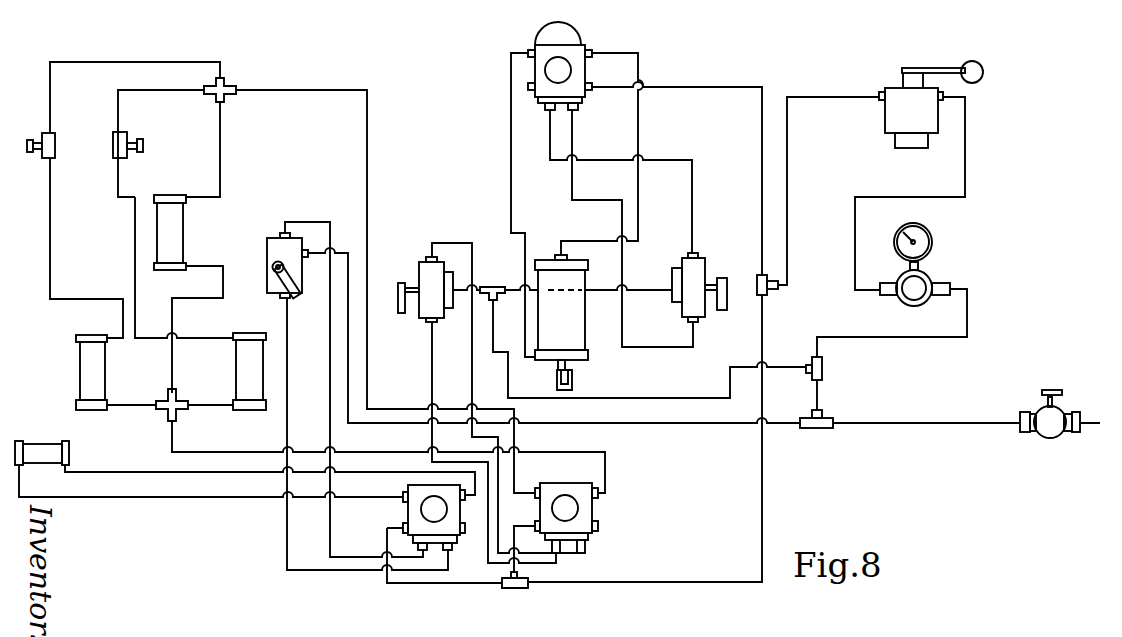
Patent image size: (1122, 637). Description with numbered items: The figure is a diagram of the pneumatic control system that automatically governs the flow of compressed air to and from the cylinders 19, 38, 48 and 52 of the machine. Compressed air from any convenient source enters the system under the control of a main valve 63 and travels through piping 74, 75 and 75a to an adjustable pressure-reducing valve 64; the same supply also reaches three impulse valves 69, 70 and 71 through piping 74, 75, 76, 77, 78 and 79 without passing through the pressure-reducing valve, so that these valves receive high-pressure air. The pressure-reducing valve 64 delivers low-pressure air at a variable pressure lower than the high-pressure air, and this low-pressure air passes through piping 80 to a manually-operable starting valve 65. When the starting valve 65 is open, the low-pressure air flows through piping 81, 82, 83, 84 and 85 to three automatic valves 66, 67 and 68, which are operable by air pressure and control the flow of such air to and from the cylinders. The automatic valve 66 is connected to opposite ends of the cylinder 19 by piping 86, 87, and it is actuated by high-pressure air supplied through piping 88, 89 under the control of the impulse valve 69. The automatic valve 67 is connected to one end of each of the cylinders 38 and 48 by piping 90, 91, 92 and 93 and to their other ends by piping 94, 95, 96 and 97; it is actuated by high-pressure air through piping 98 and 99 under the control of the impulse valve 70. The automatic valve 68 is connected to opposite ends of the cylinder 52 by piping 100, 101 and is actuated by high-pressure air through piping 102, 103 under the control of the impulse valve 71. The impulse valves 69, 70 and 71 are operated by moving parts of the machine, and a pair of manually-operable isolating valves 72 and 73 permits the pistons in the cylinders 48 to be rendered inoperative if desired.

The cylinder 19 is at (578, 331).
The cylinder 38 is at (183, 234).
The cylinders 48 is at (95, 375).
The cylinder 52 is at (43, 450).
The main valve 63 is at (1050, 438).
The adjustable pressure-reducing valve 64 is at (932, 283).
The manually-operable starting valve 65 is at (885, 119).
The automatic valve 66 is at (585, 73).
The automatic valve 67 is at (598, 508).
The automatic valve 68 is at (408, 509).
The impulse valve 69 is at (683, 311).
The impulse valve 70 is at (419, 271).
The impulse valve 71 is at (267, 252).
The isolating valve 72 is at (55, 146).
The isolating valve 73 is at (137, 142).
The piping 74 is at (907, 424).
The piping 75 is at (818, 392).
The piping 75a is at (932, 337).
The piping 76 is at (661, 398).
The piping 77 is at (487, 287).
The piping 78 is at (653, 291).
The piping 79 is at (675, 423).
The piping 80 is at (965, 168).
The piping 81 is at (787, 216).
The piping 82 is at (762, 189).
The piping 83 is at (764, 333).
The piping 84 is at (506, 555).
The piping 85 is at (470, 583).
The piping 86 is at (511, 179).
The piping 87 is at (638, 126).
The piping 88 is at (666, 161).
The piping 89 is at (573, 186).
The piping 90 is at (605, 452).
The piping 91 is at (132, 407).
The piping 92 is at (215, 407).
The piping 93 is at (174, 368).
The piping 94 is at (516, 472).
The piping 95 is at (222, 161).
The piping 96 is at (182, 88).
The piping 97 is at (115, 62).
The piping 98 is at (432, 379).
The piping 99 is at (472, 373).
The piping 100 is at (261, 472).
The piping 101 is at (258, 498).
The piping 102 is at (352, 557).
The piping 103 is at (357, 570).